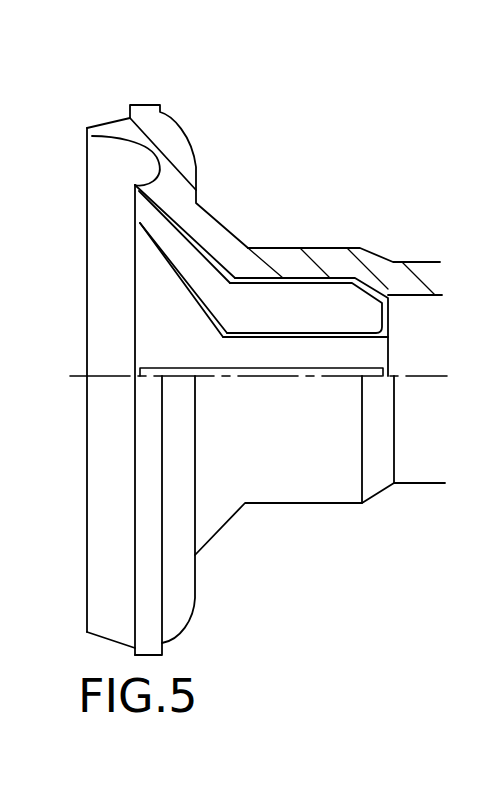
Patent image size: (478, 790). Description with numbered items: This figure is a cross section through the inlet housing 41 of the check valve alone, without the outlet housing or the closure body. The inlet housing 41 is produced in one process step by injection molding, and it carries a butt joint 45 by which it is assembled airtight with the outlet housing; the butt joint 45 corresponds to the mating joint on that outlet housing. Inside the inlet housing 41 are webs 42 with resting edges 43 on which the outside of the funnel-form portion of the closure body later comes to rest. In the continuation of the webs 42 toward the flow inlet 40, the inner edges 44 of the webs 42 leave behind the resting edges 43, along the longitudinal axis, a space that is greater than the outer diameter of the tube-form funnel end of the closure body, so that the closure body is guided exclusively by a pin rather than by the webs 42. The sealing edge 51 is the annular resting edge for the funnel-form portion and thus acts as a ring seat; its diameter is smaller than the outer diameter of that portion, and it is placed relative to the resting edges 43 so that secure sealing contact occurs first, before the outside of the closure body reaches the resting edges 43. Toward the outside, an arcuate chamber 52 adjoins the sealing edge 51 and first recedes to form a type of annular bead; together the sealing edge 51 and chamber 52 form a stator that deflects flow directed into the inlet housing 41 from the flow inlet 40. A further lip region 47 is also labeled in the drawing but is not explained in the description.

The flow inlet 40 is at (403, 348).
The inlet housing 41 is at (273, 514).
The webs 42 is at (215, 298).
The resting edges 43 is at (178, 279).
The inner edges 44 is at (299, 346).
The butt joint 45 is at (138, 123).
The lip edge 47 is at (105, 138).
The sealing edge 51 is at (133, 190).
The chamber 52 is at (133, 158).